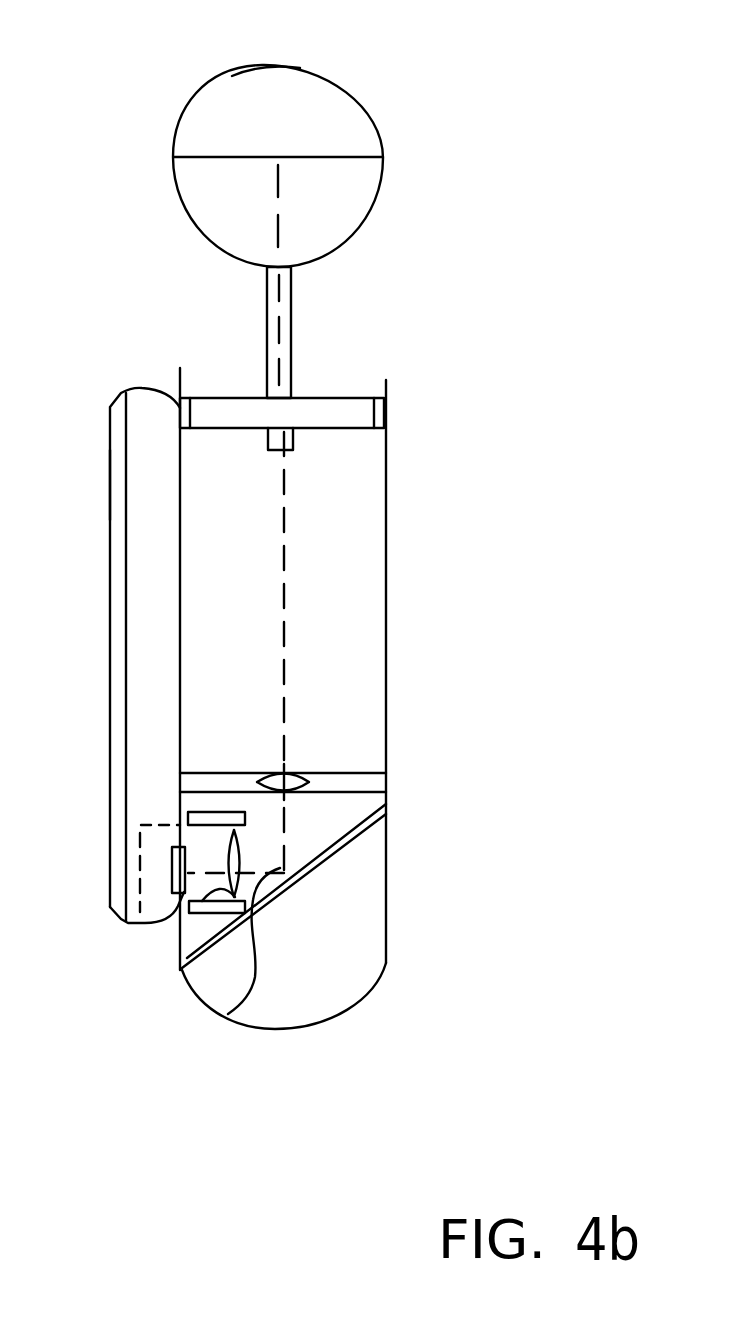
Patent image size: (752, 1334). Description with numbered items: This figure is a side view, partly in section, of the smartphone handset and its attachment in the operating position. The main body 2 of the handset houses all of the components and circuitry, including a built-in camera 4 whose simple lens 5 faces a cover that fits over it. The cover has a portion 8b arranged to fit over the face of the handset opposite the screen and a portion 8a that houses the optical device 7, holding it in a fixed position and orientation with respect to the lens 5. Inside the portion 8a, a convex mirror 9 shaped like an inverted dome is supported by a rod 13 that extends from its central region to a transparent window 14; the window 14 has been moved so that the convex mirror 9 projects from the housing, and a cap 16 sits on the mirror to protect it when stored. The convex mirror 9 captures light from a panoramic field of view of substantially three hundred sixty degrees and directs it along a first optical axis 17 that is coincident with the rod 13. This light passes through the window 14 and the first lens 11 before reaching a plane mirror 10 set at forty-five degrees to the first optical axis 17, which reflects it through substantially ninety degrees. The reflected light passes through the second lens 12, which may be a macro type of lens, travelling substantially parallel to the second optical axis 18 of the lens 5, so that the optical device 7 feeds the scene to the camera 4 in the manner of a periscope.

The main body 2 is at (110, 490).
The camera 4 is at (140, 847).
The lens 5 is at (147, 923).
The optical device 7 is at (476, 582).
The portion of the cover 8a is at (386, 605).
The portion of the cover 8b is at (147, 386).
The convex mirror 9 is at (364, 224).
The plane mirror 10 is at (283, 868).
The first lens 11 is at (306, 770).
The second lens 12 is at (182, 945).
The rod 13 is at (270, 300).
The transparent window 14 is at (338, 410).
The cap 16 is at (272, 83).
The first optical axis 17 is at (284, 525).
The second optical axis 18 is at (228, 1014).